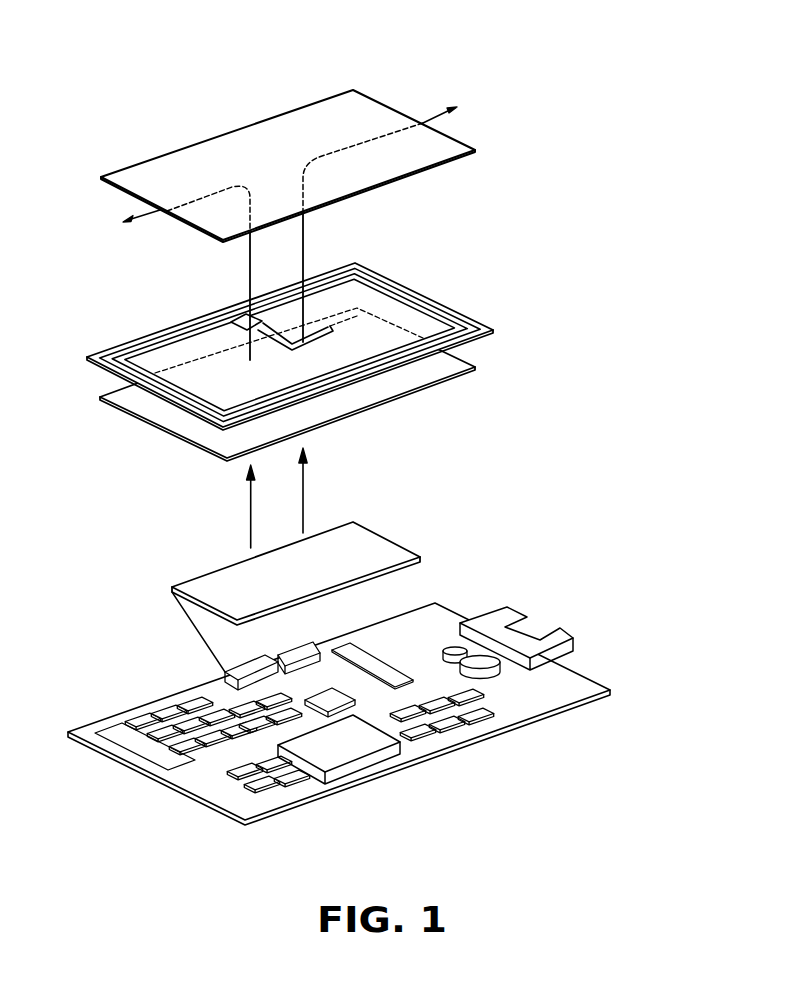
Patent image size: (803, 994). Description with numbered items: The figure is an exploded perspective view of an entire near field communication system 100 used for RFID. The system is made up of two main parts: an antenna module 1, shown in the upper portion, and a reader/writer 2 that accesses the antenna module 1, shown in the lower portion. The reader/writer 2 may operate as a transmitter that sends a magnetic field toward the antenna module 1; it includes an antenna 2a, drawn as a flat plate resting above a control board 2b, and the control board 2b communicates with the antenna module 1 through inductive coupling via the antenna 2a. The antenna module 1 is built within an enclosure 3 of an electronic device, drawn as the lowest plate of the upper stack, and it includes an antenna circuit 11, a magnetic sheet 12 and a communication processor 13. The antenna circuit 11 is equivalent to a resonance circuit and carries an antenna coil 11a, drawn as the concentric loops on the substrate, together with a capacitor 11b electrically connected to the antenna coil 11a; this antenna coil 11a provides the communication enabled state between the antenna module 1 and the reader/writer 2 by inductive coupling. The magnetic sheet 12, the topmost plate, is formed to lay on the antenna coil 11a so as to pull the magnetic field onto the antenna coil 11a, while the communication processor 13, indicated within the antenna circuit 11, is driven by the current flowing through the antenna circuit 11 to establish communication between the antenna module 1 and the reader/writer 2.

The near field communication system 100 is at (333, 26).
The antenna module 1 is at (532, 60).
The reader/writer 2 is at (637, 497).
The antenna 2a is at (383, 547).
The control board 2b is at (447, 622).
The enclosure 3 is at (400, 378).
The antenna circuit 11 is at (463, 317).
The antenna coil 11a is at (417, 302).
The capacitor 11b is at (236, 320).
The magnetic sheet 12 is at (241, 133).
The communication processor 13 is at (357, 310).